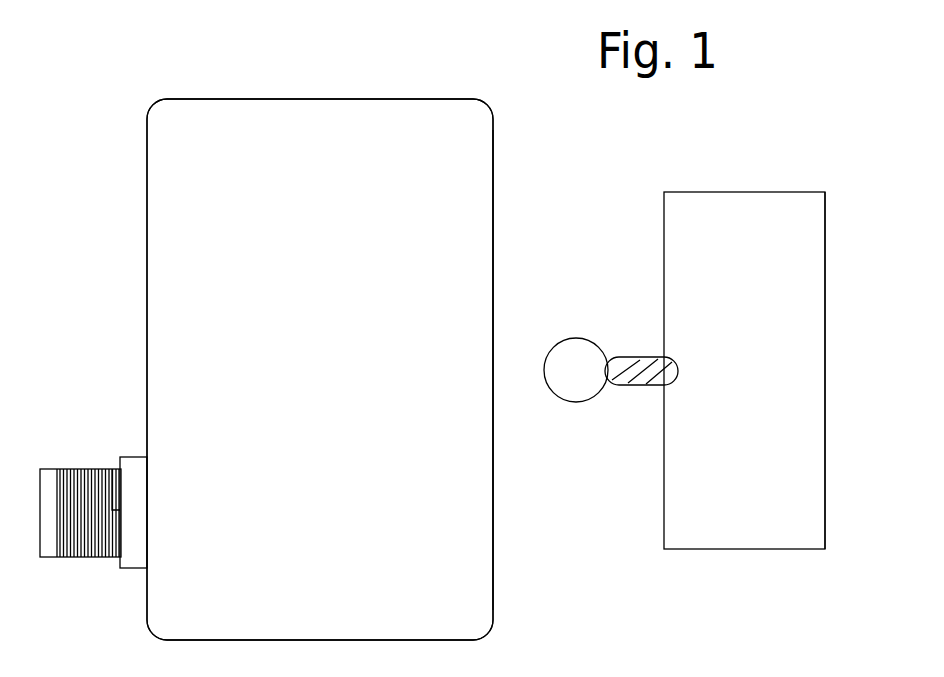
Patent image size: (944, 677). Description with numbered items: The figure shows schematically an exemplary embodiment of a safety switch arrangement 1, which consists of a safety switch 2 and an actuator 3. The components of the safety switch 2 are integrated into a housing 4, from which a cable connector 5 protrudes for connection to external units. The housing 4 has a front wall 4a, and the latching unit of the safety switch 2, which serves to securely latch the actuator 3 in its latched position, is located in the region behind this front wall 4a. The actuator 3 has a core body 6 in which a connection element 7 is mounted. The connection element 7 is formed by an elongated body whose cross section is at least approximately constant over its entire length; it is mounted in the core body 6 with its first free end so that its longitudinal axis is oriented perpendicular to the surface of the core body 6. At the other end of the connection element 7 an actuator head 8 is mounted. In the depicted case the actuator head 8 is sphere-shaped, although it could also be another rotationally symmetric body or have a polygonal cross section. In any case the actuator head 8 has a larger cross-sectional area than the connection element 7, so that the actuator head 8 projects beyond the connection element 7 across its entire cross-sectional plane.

The safety switch arrangement 1 is at (60, 206).
The safety switch 2 is at (357, 71).
The actuator 3 is at (827, 190).
The housing 4 is at (197, 103).
The front wall 4a is at (476, 171).
The cable connector 5 is at (74, 469).
The core body 6 is at (824, 372).
The connection element 7 is at (631, 358).
The actuator head 8 is at (567, 350).